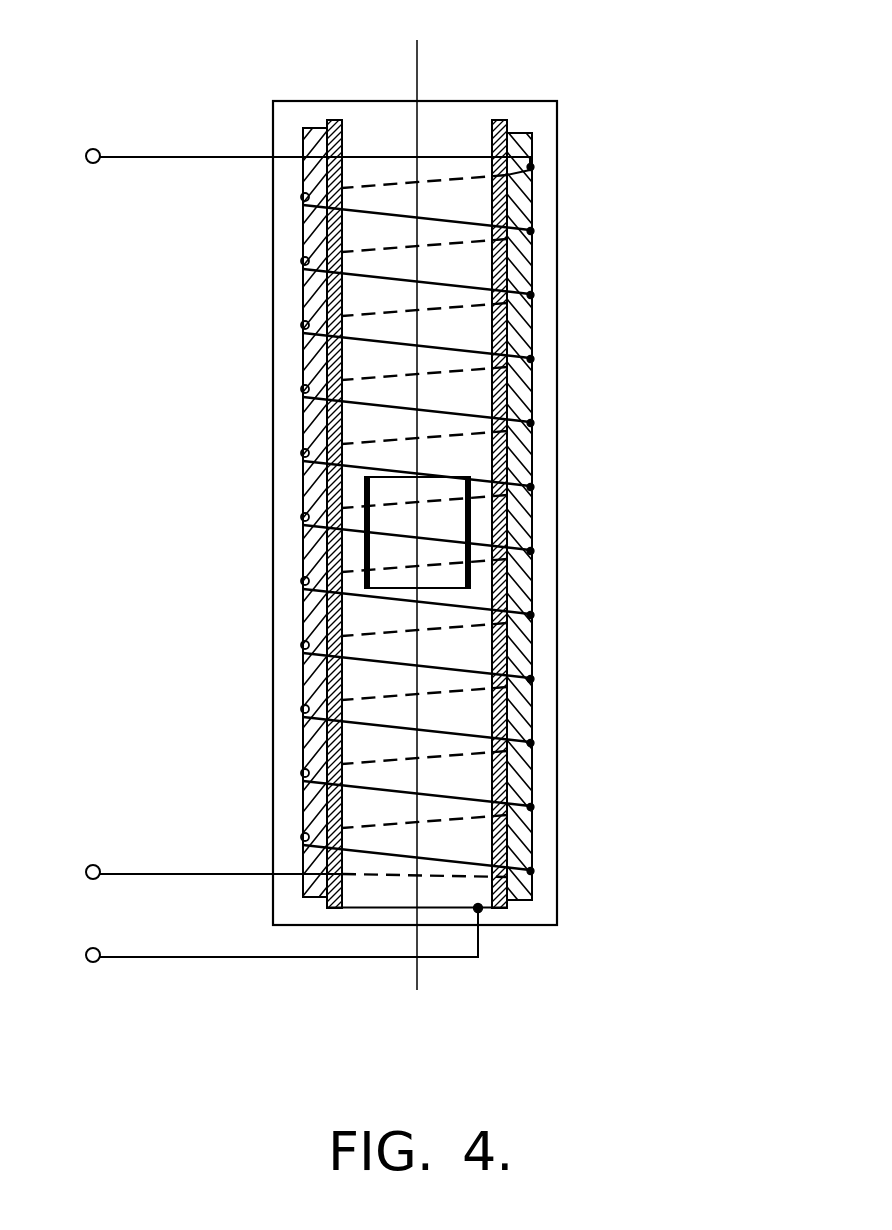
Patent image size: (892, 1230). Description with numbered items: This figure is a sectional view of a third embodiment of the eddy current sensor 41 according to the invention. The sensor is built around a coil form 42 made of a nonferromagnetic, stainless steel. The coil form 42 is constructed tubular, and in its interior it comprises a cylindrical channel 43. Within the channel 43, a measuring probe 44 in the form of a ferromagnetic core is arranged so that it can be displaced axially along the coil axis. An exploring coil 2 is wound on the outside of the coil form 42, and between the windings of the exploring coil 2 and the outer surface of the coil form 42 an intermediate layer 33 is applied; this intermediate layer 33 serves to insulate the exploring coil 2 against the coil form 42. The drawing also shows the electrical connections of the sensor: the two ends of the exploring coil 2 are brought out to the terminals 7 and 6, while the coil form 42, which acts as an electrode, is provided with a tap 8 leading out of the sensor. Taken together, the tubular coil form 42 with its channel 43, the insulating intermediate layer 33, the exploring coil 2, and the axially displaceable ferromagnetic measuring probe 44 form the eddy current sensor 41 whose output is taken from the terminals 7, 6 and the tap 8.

The eddy current sensor 41 is at (578, 170).
The cylindrical channel 43 is at (390, 147).
The intermediate layer 33 is at (527, 527).
The coil form 42 is at (507, 710).
The exploring coil 2 is at (455, 287).
The measuring probe 44 is at (353, 538).
The terminal 7 is at (287, 156).
The terminal 6 is at (193, 869).
The tap 8 is at (264, 945).